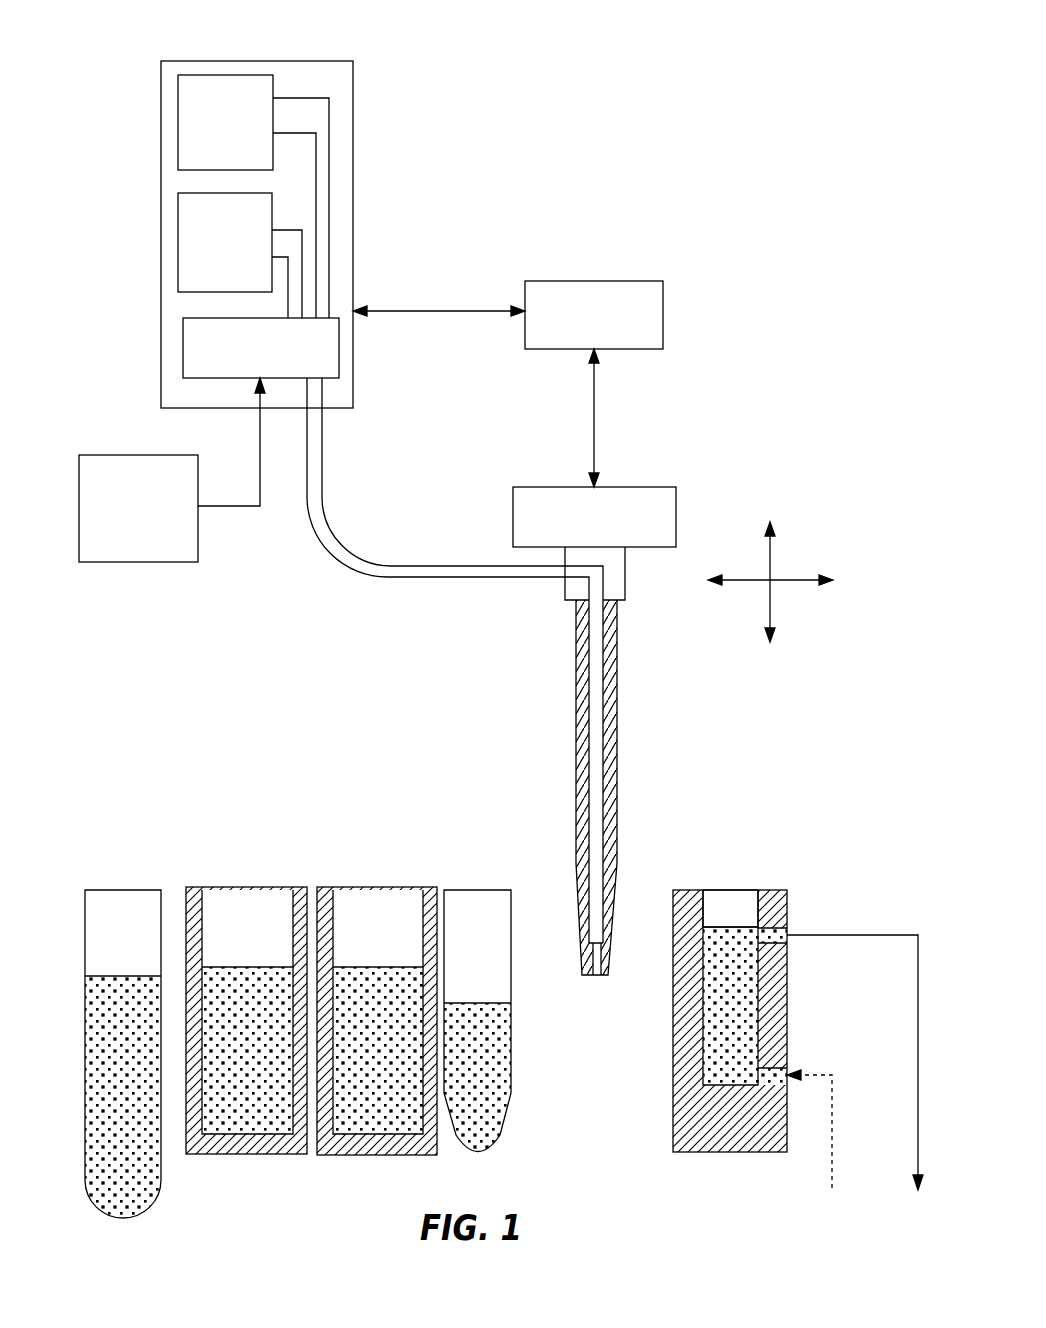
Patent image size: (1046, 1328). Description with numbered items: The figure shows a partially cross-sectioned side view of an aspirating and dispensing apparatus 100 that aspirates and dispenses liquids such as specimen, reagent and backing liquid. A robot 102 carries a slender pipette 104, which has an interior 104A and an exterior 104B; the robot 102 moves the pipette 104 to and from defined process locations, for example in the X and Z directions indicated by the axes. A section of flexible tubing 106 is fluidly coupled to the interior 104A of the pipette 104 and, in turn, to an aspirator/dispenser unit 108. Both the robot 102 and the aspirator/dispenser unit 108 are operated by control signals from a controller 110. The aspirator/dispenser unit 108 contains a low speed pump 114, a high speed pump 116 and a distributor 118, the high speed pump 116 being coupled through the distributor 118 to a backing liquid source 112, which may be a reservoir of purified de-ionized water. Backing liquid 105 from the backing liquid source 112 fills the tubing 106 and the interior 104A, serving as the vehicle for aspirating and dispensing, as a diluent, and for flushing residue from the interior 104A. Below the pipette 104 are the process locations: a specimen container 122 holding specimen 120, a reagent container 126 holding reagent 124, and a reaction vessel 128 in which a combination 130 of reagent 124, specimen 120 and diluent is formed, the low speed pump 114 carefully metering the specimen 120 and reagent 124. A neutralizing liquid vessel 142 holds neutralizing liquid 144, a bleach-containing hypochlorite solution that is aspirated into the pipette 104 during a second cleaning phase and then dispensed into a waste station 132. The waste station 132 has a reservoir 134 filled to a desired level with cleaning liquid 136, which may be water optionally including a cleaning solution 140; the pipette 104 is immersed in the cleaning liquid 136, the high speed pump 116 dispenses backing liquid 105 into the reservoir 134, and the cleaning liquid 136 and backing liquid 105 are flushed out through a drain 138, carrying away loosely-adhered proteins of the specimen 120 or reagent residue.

The aspirating and dispensing apparatus 100 is at (498, 613).
The robot 102 is at (633, 487).
The pipette 104 is at (582, 787).
The interior 104A is at (577, 777).
The exterior 104B is at (577, 705).
The backing liquid 105 is at (597, 635).
The tubing 106 is at (435, 578).
The aspirator/dispenser unit 108 is at (213, 208).
The controller 110 is at (664, 317).
The backing liquid source 112 is at (135, 453).
The low speed pump 114 is at (177, 114).
The high speed pump 116 is at (177, 240).
The distributor 118 is at (183, 349).
The specimen 120 is at (103, 1077).
The specimen container 122 is at (144, 1028).
The reagent 124 is at (225, 1077).
The reagent container 126 is at (257, 994).
The reaction vessel 128 is at (496, 996).
The combination 130 is at (458, 1073).
The waste station 132 is at (769, 1017).
The reservoir 134 is at (703, 1020).
The cleaning liquid 136 is at (741, 927).
The drain 138 is at (917, 1013).
The cleaning solution 140 is at (835, 1155).
The neutralizing liquid vessel 142 is at (385, 994).
The neutralizing liquid 144 is at (357, 1077).